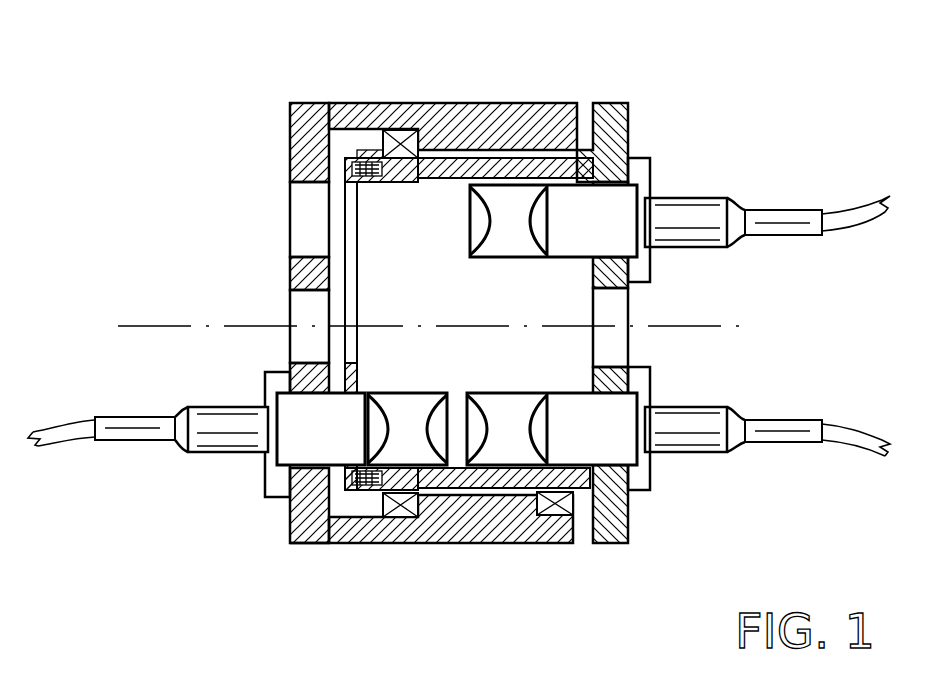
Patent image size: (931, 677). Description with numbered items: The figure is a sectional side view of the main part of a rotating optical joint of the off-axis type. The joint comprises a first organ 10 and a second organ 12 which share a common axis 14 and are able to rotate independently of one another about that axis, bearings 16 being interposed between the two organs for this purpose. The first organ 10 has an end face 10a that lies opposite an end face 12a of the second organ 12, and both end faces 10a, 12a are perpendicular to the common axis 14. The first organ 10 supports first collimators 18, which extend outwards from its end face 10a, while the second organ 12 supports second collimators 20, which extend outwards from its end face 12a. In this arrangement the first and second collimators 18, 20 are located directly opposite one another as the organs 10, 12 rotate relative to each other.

The first organ 10 is at (640, 123).
The end face 10a is at (641, 490).
The second organ 12 is at (278, 116).
The end face 12a is at (333, 205).
The common axis 14 is at (186, 326).
The bearings 16 is at (490, 515).
The first collimators 18 is at (606, 398).
The second collimators 20 is at (300, 447).